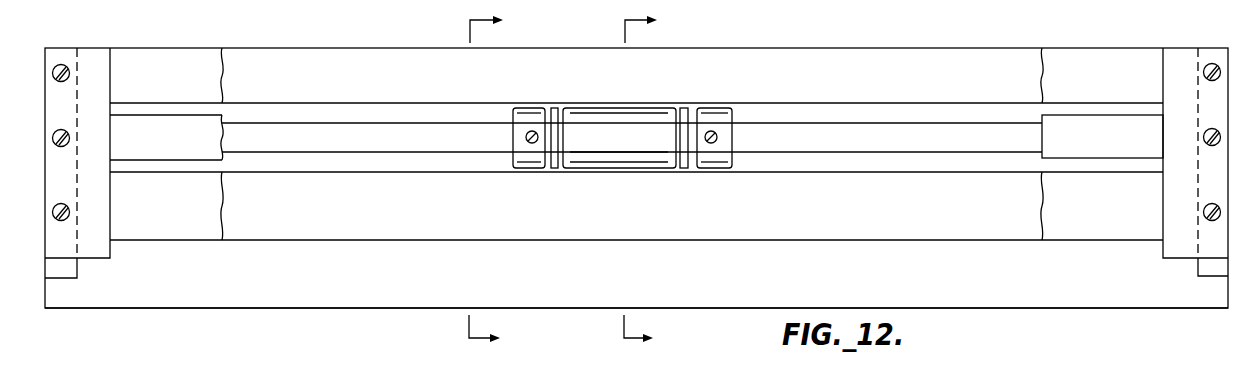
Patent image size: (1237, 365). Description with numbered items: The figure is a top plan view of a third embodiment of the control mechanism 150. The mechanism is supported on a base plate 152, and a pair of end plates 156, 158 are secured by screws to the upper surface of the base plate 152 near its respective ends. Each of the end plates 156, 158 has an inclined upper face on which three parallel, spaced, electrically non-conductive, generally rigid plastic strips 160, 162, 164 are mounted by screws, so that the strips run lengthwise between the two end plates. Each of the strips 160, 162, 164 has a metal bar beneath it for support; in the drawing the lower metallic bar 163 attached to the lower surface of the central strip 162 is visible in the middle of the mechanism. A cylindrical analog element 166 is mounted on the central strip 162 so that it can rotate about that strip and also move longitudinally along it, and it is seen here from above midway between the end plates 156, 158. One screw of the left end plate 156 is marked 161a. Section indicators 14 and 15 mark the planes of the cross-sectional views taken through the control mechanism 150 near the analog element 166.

The control mechanism 150 is at (1121, 325).
The base plate 152 is at (272, 308).
The end plate 156 is at (103, 147).
The end plate 158 is at (1182, 199).
The strip 160 is at (213, 81).
The screw 161a is at (62, 64).
The central strip 162 is at (216, 141).
The lower metallic bar 163 is at (368, 145).
The strip 164 is at (213, 216).
The cylindrical analog element 166 is at (642, 119).
The section line 14- 14 is at (499, 178).
The section line 15- 15 is at (653, 178).